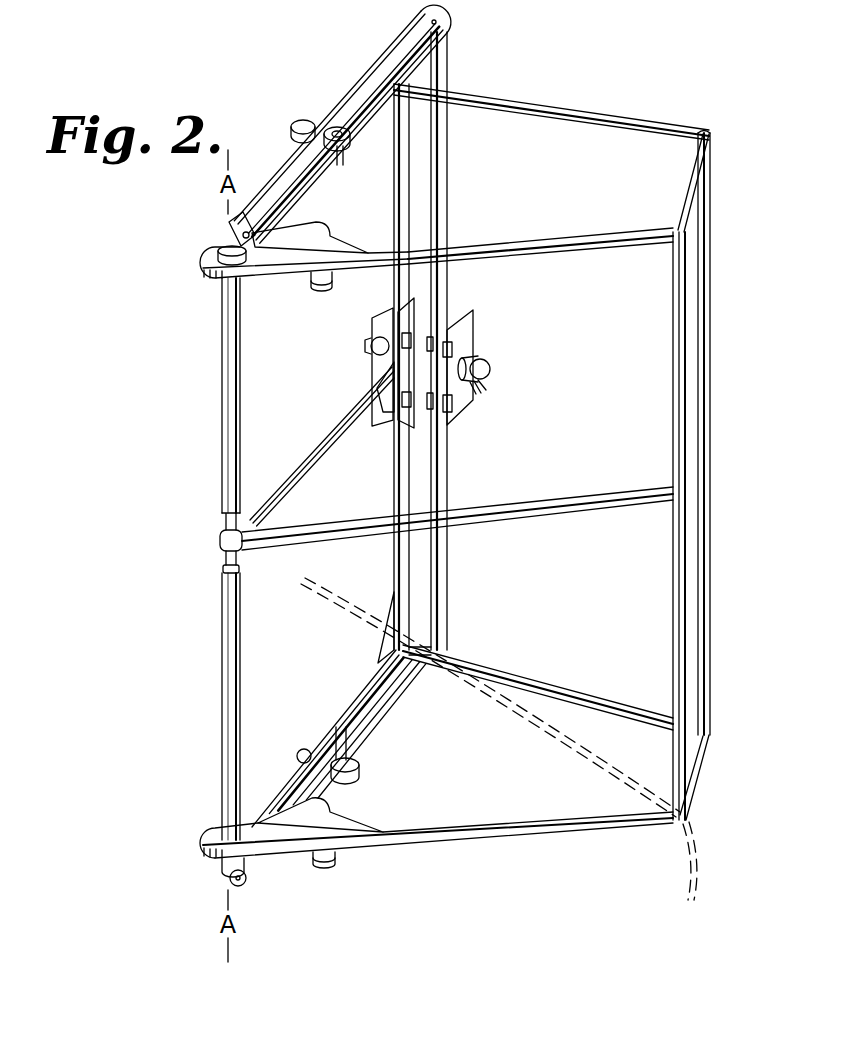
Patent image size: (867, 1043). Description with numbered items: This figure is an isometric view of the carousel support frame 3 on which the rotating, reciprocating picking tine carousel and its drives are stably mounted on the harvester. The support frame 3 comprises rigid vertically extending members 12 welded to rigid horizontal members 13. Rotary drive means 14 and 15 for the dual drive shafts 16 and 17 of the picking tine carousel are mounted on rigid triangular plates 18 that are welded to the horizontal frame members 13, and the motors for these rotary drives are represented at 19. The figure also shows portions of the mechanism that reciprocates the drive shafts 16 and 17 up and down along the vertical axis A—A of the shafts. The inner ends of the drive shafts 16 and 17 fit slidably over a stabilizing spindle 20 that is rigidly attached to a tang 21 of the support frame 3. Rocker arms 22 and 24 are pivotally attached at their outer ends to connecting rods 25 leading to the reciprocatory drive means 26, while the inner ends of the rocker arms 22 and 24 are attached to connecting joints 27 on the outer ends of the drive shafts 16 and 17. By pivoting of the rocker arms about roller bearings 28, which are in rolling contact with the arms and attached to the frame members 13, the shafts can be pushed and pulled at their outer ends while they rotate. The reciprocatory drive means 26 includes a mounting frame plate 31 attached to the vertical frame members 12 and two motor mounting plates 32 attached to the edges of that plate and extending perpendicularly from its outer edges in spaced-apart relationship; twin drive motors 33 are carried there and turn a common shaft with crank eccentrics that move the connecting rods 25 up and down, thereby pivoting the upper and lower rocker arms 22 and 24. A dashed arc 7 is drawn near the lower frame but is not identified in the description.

The carousel support frame 3 is at (584, 81).
The swing path 7 is at (694, 868).
The vertically extending members 12 is at (397, 196).
The horizontal members 13 is at (355, 135).
The rotary drive means 14 is at (193, 262).
The rotary drive means 15 is at (257, 835).
The drive shaft 16 is at (221, 438).
The drive shaft 17 is at (228, 723).
The triangular plates 18 is at (337, 240).
The motors 19 is at (310, 278).
The stabilizing spindle 20 is at (227, 528).
The tang 21 is at (260, 540).
The rocker arm 22 is at (365, 77).
The rocker arm 24 is at (377, 715).
The connecting rods 25 is at (445, 60).
The reciprocatory drive means 26 is at (497, 312).
The connecting joints 27 is at (223, 242).
The roller bearings 28 is at (298, 130).
The mounting frame plate 31 is at (427, 385).
The motor mounting plates 32 is at (390, 325).
The drive motors 33 is at (370, 344).